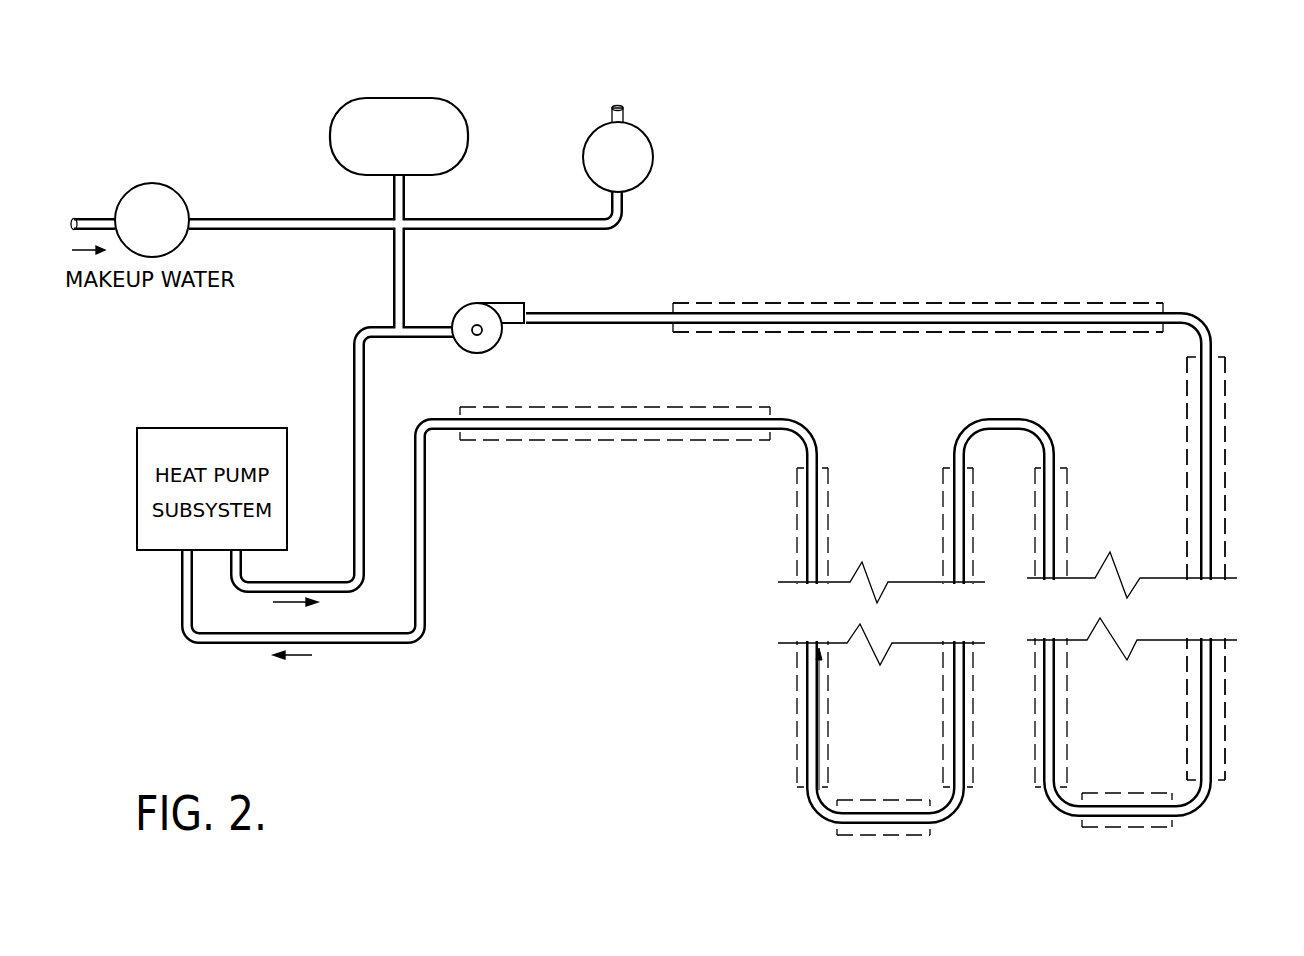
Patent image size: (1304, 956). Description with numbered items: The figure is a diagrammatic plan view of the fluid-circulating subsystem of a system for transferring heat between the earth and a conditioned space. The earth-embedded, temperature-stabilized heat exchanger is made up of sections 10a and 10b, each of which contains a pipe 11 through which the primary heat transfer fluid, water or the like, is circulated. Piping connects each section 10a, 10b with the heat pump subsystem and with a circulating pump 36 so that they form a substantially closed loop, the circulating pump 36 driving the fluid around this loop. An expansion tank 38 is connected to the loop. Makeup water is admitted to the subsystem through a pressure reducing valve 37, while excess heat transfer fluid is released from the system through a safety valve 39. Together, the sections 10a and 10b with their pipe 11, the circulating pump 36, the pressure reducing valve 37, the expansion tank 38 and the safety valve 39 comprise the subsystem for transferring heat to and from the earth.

The section of temperature-stabilized heat exchanger 10a is at (962, 330).
The section of temperature-stabilized heat exchanger 10b is at (553, 438).
The pipe 11 is at (1063, 325).
The circulating pump 36 is at (488, 340).
The pressure reducing valve 37 is at (175, 186).
The expansion tank 38 is at (384, 152).
The safety valve 39 is at (655, 160).